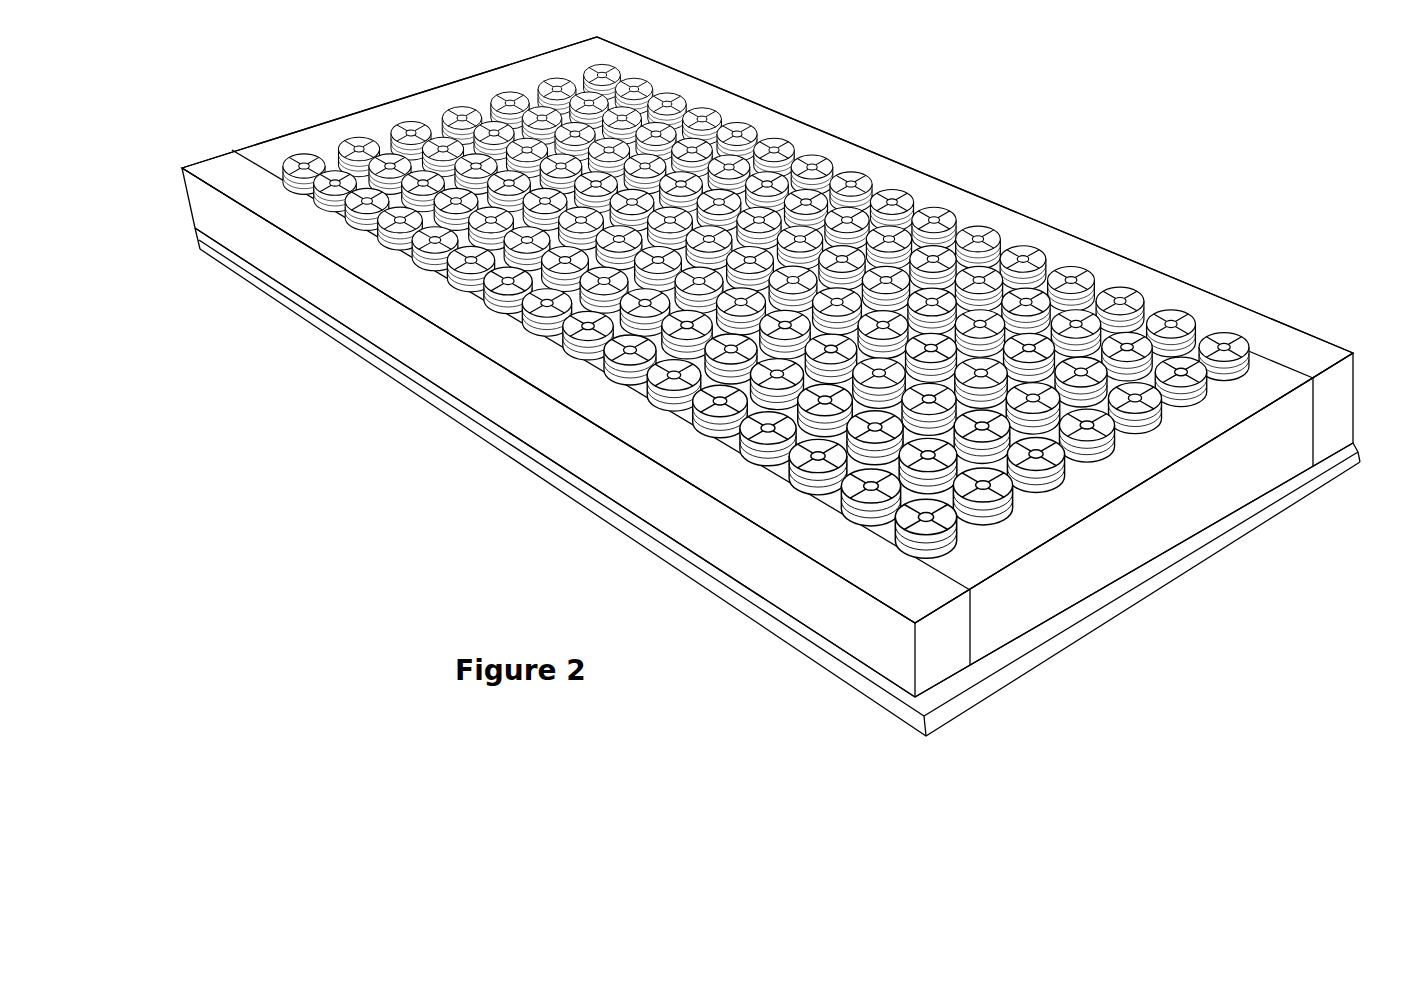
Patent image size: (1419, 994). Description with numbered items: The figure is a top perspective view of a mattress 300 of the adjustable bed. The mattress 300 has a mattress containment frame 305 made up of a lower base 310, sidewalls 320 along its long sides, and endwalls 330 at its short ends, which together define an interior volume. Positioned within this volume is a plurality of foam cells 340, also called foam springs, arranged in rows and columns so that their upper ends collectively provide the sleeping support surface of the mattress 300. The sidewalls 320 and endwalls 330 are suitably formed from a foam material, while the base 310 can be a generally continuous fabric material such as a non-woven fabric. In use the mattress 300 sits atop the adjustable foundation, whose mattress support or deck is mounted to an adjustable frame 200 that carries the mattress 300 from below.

The adjustable frame 200 is at (1185, 560).
The mattress 300 is at (1112, 82).
The mattress containment frame 305 is at (733, 46).
The base 310 is at (540, 465).
The sidewalls 320 is at (905, 175).
The endwalls 330 is at (445, 80).
The foam cells 340 is at (775, 150).